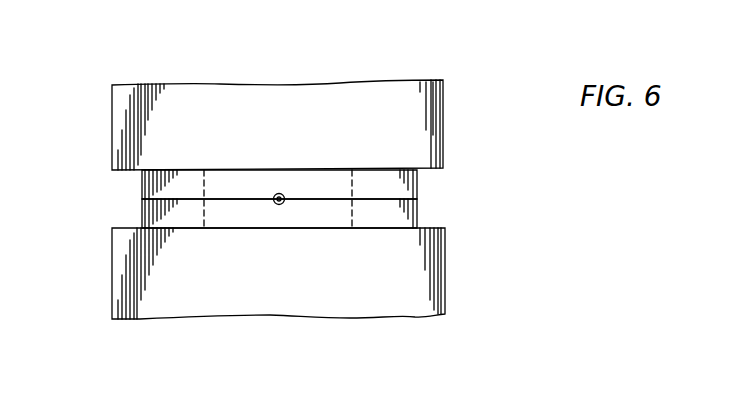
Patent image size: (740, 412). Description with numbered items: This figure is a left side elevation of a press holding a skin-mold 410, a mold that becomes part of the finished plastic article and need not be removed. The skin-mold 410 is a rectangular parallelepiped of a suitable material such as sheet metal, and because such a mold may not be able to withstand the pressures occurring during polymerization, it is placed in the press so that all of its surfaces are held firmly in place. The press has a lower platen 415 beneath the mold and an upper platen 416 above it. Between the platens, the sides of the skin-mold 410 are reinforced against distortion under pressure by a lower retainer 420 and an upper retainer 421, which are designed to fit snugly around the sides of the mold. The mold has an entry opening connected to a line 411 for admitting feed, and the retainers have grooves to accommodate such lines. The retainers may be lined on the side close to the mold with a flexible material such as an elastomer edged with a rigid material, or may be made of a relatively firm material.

The upper platen 416 is at (427, 108).
The lower platen 415 is at (432, 273).
The upper retainer 421 is at (417, 183).
The lower retainer 420 is at (417, 210).
The line 411 is at (281, 193).
The skin-mold 410 is at (209, 214).